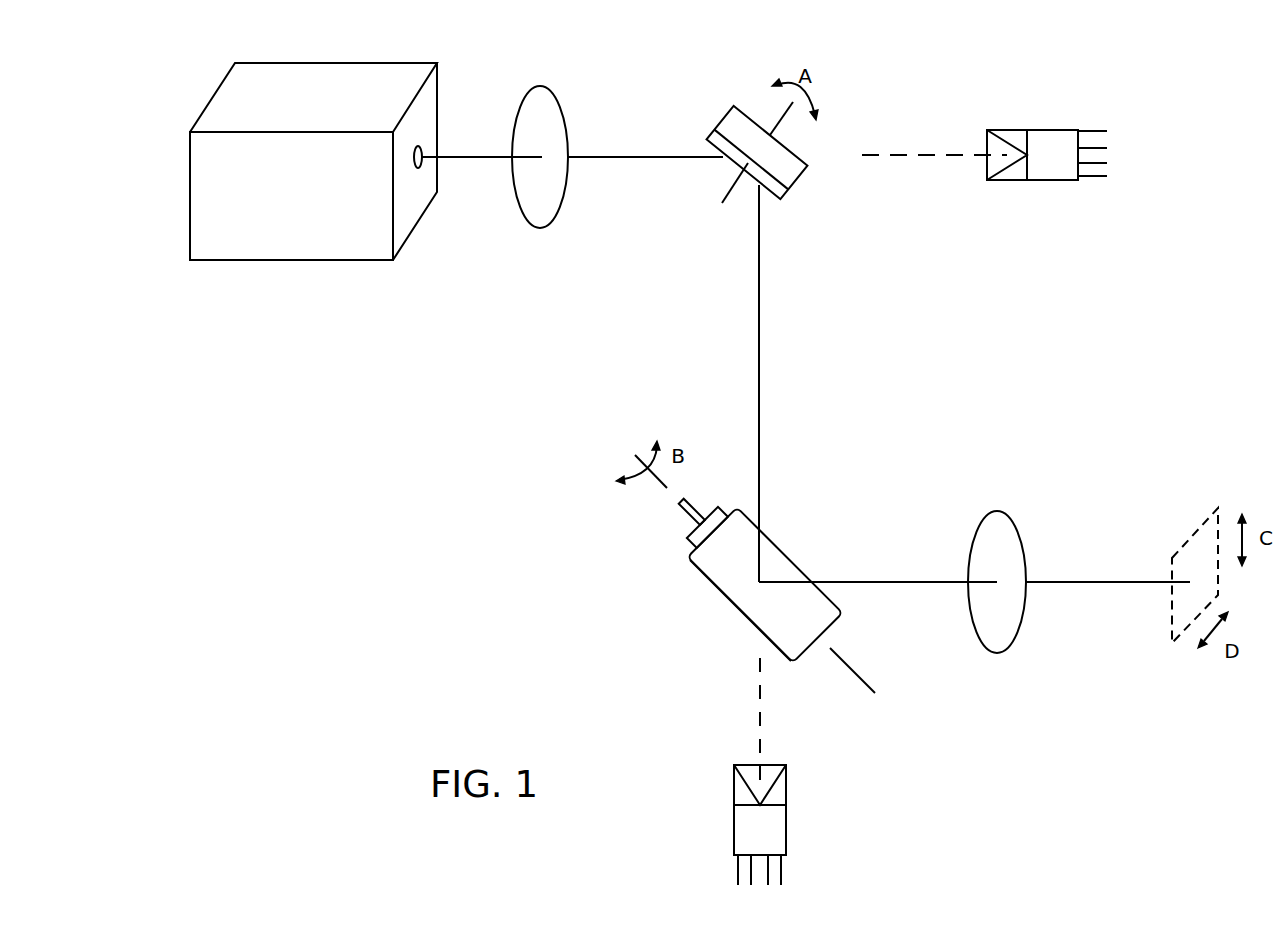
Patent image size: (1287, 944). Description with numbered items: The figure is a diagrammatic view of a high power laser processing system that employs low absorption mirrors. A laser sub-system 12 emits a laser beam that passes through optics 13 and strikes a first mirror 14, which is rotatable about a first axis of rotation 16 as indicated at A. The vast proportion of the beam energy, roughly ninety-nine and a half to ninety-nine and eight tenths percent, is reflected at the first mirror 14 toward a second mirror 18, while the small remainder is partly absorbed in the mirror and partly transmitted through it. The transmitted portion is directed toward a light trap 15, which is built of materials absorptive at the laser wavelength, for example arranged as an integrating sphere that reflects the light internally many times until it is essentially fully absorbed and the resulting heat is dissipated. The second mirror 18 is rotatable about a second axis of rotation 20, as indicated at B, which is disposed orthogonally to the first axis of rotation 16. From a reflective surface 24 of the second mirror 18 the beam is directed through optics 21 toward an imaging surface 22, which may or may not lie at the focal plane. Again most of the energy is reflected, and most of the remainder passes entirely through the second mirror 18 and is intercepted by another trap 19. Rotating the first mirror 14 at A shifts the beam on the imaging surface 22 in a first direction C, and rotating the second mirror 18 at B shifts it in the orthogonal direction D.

The laser sub-system 12 is at (365, 75).
The optics 13 is at (541, 86).
The first mirror 14 is at (788, 171).
The light trap 15 is at (1058, 128).
The first axis of rotation 16 is at (727, 189).
The second mirror 18 is at (697, 572).
The trap 19 is at (787, 827).
The second axis of rotation 20 is at (862, 669).
The optics 21 is at (997, 654).
The imaging surface 22 is at (1189, 540).
The reflective surface 24 is at (770, 630).